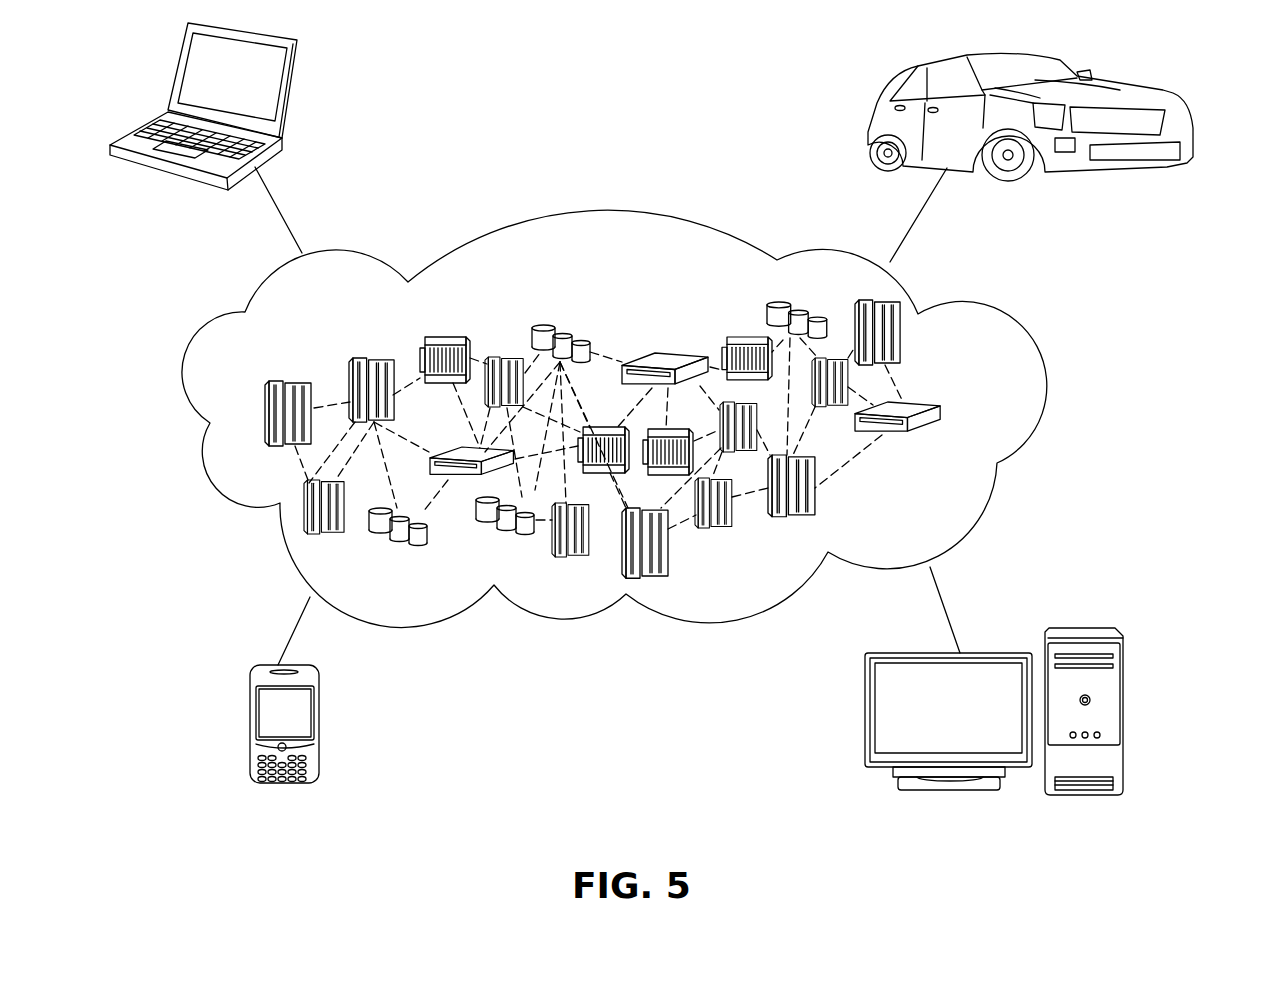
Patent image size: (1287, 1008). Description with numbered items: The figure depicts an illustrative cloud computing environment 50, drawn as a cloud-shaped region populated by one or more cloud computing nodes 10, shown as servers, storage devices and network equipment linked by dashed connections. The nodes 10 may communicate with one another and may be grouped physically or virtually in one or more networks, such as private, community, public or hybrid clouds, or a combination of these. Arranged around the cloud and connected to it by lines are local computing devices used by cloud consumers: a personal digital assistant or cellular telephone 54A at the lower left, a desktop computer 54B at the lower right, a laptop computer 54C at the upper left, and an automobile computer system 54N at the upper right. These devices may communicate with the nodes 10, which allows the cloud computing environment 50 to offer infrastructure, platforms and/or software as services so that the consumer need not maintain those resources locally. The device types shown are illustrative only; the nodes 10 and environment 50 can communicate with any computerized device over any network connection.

The cloud computing node 10 is at (651, 418).
The cloud computing environment 50 is at (1007, 330).
The personal digital assistant (PDA) or cellular telephone 54A is at (250, 728).
The desktop computer 54B is at (1090, 628).
The laptop computer 54C is at (289, 92).
The automobile computer system 54N is at (878, 100).